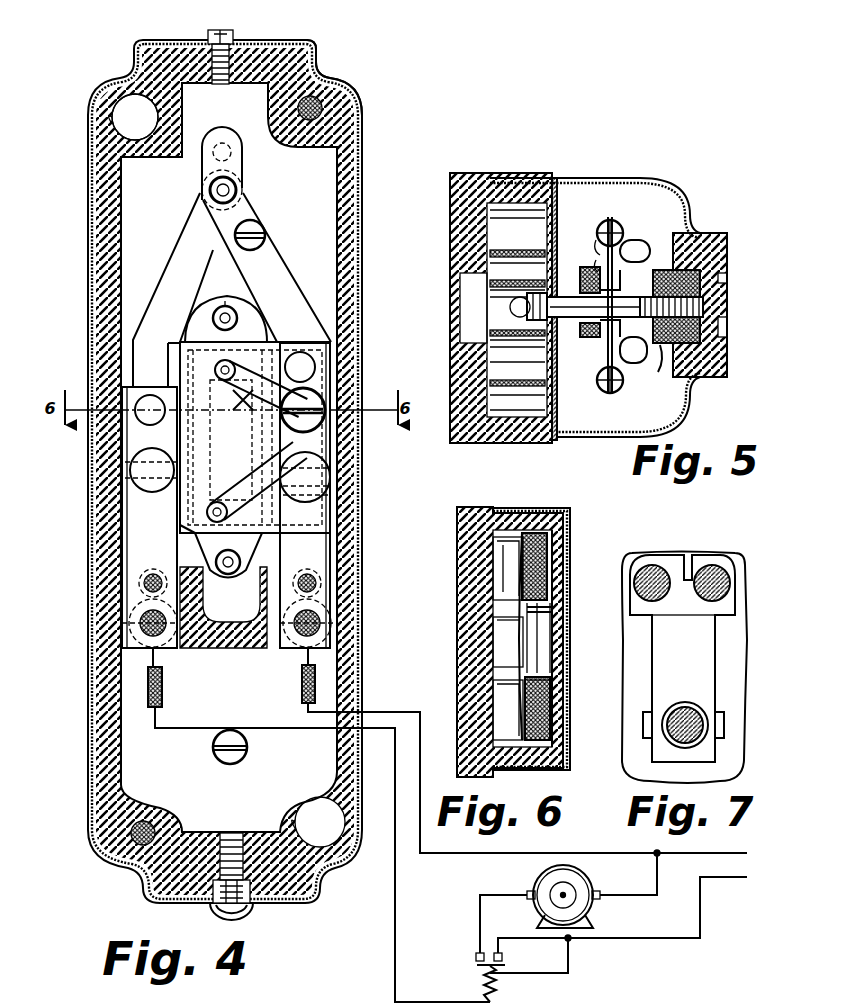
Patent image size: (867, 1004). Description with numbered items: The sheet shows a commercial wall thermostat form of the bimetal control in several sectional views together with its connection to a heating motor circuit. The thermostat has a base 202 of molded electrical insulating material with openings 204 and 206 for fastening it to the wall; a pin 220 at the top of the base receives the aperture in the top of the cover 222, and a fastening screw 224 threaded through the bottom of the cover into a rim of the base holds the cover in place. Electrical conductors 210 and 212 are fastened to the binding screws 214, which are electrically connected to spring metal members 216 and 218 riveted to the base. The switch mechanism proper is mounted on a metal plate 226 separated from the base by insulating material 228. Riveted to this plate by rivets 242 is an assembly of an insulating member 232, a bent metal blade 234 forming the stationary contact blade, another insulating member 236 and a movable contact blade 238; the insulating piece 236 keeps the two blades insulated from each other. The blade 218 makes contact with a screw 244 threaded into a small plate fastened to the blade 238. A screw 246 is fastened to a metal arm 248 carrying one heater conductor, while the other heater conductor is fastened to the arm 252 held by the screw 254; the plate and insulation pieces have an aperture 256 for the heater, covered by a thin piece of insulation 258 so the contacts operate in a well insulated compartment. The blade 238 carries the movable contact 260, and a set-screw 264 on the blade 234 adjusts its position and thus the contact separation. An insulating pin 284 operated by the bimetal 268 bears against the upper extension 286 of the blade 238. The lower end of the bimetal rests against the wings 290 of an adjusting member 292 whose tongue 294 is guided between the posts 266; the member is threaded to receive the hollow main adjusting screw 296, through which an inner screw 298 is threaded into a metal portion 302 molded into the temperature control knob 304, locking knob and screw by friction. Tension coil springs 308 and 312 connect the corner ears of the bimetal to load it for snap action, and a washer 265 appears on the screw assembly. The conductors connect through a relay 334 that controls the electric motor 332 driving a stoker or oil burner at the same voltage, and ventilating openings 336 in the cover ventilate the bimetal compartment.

In FIG. 4, the base 202 is at (140, 810).
In FIG. 5, the base 202 is at (547, 440).
In FIG. 6, the base 202 is at (462, 622).
In FIG. 4, the opening 204 is at (92, 130).
In FIG. 4, the opening 206 is at (296, 818).
In FIG. 4, the electrical conductor 210 is at (163, 688).
In FIG. 4, the electrical conductor 212 is at (302, 688).
In FIG. 4, the binding screw 214 is at (170, 650).
In FIG. 4, the spring metal member 216 is at (165, 561).
In FIG. 4, the spring metal member 218 is at (318, 558).
In FIG. 4, the pin 220 is at (232, 32).
In FIG. 6, the pin 220 is at (510, 508).
In FIG. 4, the cover 222 is at (318, 62).
In FIG. 5, the cover 222 is at (527, 178).
In FIG. 4, the fastening screw 224 is at (253, 908).
In FIG. 5, the fastening screw 224 is at (525, 305).
In FIG. 5, the metal plate 226 is at (558, 398).
In FIG. 6, the metal plate 226 is at (568, 705).
In FIG. 5, the insulating material 228 is at (550, 405).
In FIG. 6, the insulating material 228 is at (540, 680).
In FIG. 6, the insulating member 232 is at (548, 697).
In FIG. 4, the bent metal blade 234 is at (284, 272).
In FIG. 6, the insulating member 236 is at (535, 650).
In FIG. 4, the movable contact blade 238 is at (172, 257).
In FIG. 4, the rivet 242 is at (228, 312).
In FIG. 4, the screw 244 is at (150, 458).
In FIG. 4, the screw 246 is at (338, 486).
In FIG. 4, the metal arm 248 is at (288, 508).
In FIG. 4, the arm 252 is at (250, 405).
In FIG. 6, the arm 252 is at (490, 650).
In FIG. 4, the screw 254 is at (326, 396).
In FIG. 6, the screw 254 is at (520, 700).
In FIG. 6, the aperture 256 is at (535, 625).
In FIG. 4, the thin piece of insulation 258 is at (190, 524).
In FIG. 6, the thin piece of insulation 258 is at (540, 615).
In FIG. 4, the movable contact 260 is at (215, 191).
In FIG. 4, the set-screw 264 is at (262, 232).
In FIG. 5, the washer 265 is at (652, 333).
In FIG. 7, the post 266 is at (652, 573).
In FIG. 7, the bimetal 268 is at (727, 637).
In FIG. 4, the insulating pin 284 is at (205, 160).
In FIG. 4, the upper extension 286 is at (238, 153).
In FIG. 5, the wing 290 is at (605, 345).
In FIG. 7, the wing 290 is at (730, 738).
In FIG. 5, the adjusting member 292 is at (585, 280).
In FIG. 7, the adjusting member 292 is at (700, 677).
In FIG. 7, the tongue 294 is at (688, 578).
In FIG. 5, the main adjusting screw 296 is at (643, 268).
In FIG. 7, the main adjusting screw 296 is at (690, 718).
In FIG. 4, the screw 298 is at (248, 750).
In FIG. 5, the screw 298 is at (527, 303).
In FIG. 5, the metal portion 302 is at (660, 360).
In FIG. 5, the temperature control knob 304 is at (733, 358).
In FIG. 5, the tension coil spring 308 is at (618, 392).
In FIG. 5, the tension coil spring 312 is at (622, 232).
In FIG. 4, the electric motor 332 is at (545, 888).
In FIG. 4, the relay 334 is at (478, 965).
In FIG. 5, the ventilating opening 336 is at (596, 240).